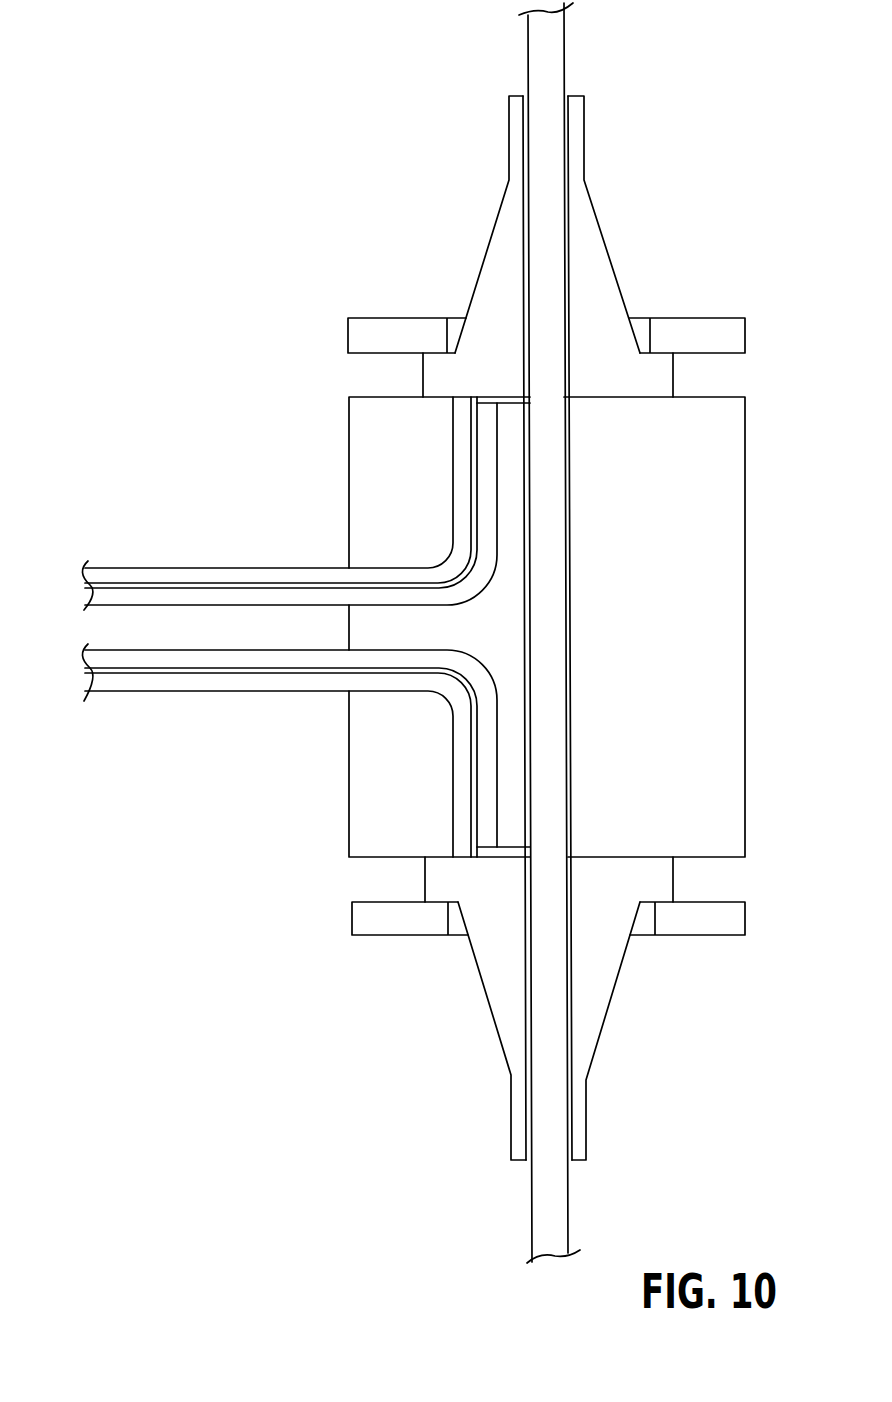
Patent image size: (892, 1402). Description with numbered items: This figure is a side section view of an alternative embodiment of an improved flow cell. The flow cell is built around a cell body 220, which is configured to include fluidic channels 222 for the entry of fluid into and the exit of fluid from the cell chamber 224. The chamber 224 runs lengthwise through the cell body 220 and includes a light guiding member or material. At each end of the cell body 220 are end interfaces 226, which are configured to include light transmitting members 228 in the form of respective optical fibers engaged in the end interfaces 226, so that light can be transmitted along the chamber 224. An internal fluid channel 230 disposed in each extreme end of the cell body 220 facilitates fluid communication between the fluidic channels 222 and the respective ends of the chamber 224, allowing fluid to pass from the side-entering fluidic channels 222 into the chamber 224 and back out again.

The cell body 220 is at (730, 668).
The fluidic channels 222 is at (240, 575).
The cell chamber 224 is at (555, 478).
The end interfaces 226 is at (600, 262).
The light transmitting members 228 is at (536, 57).
The internal fluid channel 230 is at (512, 402).